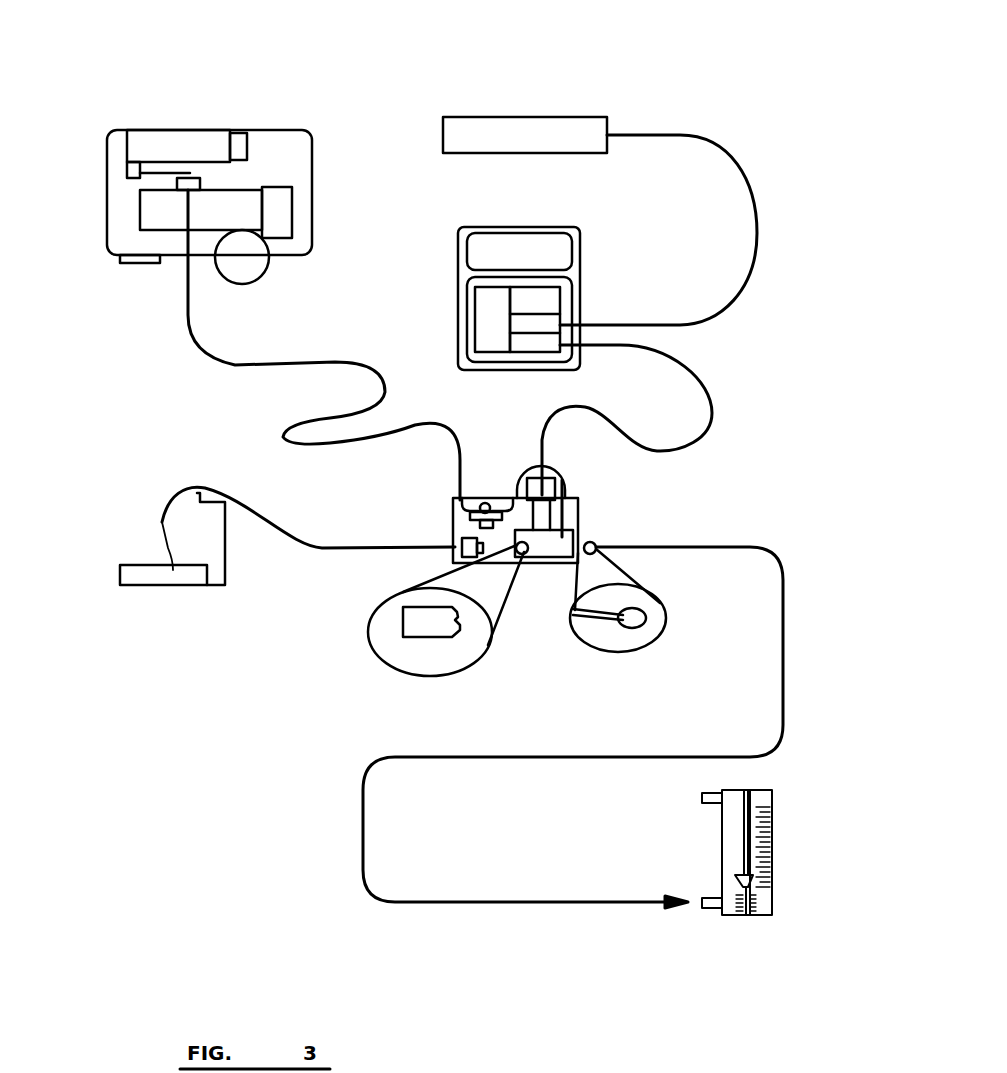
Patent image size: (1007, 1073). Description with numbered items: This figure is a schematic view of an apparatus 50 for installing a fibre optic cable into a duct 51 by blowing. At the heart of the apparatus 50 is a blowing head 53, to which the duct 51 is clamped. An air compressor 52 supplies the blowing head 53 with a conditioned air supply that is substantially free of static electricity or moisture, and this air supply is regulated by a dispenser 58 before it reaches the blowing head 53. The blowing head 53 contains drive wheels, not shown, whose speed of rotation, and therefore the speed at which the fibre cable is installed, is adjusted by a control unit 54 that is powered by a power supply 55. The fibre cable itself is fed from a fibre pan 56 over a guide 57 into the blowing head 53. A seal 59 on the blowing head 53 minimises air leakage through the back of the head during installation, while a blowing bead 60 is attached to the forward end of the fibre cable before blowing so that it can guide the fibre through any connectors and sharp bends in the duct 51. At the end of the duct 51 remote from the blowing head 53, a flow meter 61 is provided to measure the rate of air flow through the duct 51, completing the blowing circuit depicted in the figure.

The apparatus 50 is at (740, 386).
The duct 51 is at (363, 828).
The air compressor 52 is at (207, 130).
The blowing head 53 is at (528, 591).
The control unit 54 is at (460, 228).
The power supply 55 is at (518, 128).
The fibre pan 56 is at (120, 578).
The guide 57 is at (180, 500).
The dispenser 58 is at (457, 502).
The seal 59 is at (528, 555).
The blowing bead 60 is at (636, 622).
The flow meter 61 is at (722, 856).